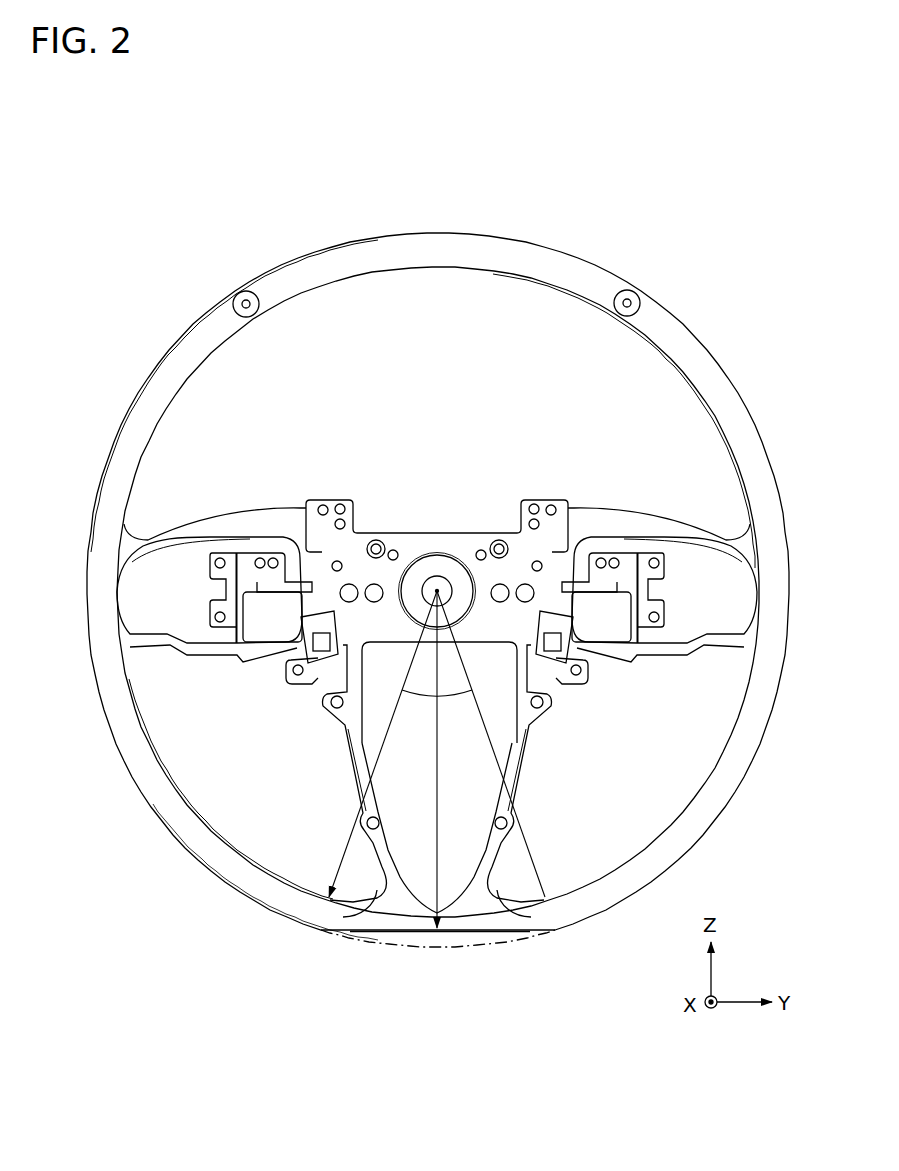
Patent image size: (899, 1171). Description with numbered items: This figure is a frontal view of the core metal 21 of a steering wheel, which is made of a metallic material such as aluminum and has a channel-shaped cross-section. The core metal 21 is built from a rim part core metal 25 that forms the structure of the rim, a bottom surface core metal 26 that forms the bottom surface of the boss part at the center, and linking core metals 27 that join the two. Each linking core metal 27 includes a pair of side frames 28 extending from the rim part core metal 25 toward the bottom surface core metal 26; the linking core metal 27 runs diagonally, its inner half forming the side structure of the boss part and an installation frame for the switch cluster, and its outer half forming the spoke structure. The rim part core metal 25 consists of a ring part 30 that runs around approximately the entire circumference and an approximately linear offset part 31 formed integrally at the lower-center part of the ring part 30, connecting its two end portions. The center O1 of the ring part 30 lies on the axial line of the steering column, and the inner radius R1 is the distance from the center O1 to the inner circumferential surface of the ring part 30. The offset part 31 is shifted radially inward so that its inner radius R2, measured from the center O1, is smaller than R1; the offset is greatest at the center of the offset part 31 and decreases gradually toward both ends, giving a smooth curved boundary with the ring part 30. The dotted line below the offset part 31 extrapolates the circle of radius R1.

The core metal 21 is at (438, 582).
The ring part 30 is at (438, 586).
The rim part core metal 25 is at (679, 324).
The bottom surface core metal 26 is at (478, 532).
The side frames 28 is at (437, 561).
The linking core metal 27 is at (628, 516).
The offset part 31 is at (472, 934).
The center of the ring part O1 is at (438, 588).
The inner radius of the ring part R1 is at (378, 785).
The inner radius of the offset part R2 is at (440, 812).